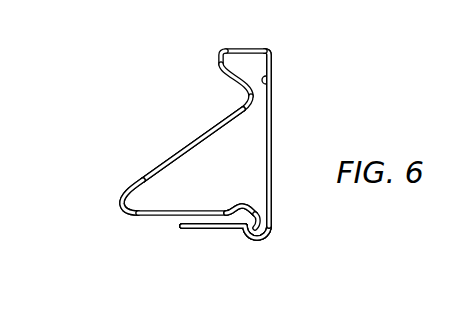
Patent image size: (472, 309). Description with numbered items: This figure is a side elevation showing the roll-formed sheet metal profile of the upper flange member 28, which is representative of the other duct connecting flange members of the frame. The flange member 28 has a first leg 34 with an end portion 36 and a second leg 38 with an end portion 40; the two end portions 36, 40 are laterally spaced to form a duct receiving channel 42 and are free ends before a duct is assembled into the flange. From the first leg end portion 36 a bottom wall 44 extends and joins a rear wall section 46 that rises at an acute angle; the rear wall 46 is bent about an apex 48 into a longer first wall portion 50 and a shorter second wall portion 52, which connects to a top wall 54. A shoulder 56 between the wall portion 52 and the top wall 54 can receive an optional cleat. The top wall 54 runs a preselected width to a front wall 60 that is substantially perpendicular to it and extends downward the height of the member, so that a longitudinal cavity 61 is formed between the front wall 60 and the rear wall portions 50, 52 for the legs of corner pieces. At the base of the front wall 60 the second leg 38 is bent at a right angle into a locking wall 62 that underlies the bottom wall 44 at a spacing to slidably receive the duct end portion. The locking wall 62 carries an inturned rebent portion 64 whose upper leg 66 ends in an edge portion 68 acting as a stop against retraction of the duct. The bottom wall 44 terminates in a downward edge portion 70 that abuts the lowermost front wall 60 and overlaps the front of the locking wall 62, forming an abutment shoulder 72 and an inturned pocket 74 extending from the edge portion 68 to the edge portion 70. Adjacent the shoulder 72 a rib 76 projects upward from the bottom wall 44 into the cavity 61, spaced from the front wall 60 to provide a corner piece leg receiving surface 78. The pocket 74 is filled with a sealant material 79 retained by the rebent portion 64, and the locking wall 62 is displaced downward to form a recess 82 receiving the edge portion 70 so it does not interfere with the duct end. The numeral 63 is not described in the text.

The upper flange member 28 is at (293, 82).
The first leg 34 is at (120, 177).
The first leg end portion 36 is at (253, 187).
The second leg 38 is at (277, 222).
The second leg end portion 40 is at (220, 242).
The duct receiving channel 42 is at (141, 221).
The bottom wall section 44 is at (182, 211).
The rear wall section 46 is at (183, 122).
The apex 48 is at (245, 97).
The first wall portion 50 is at (152, 170).
The second wall portion 52 is at (225, 72).
The top wall 54 is at (250, 48).
The shoulder 56 is at (218, 53).
The front wall 60 is at (271, 112).
The cavity 61 is at (227, 138).
The locking wall 62 is at (207, 232).
The dimple 63 is at (267, 78).
The inturned rebent portion 64 is at (172, 231).
The upper leg 66 is at (173, 221).
The edge portion 68 is at (202, 224).
The downward edge portion 70 is at (270, 232).
The abutment shoulder 72 is at (268, 240).
The pocket 74 is at (262, 213).
The rib 76 is at (235, 211).
The corner piece leg receiving surface 78 is at (252, 213).
The sealant material 79 is at (228, 224).
The recess 82 is at (255, 242).